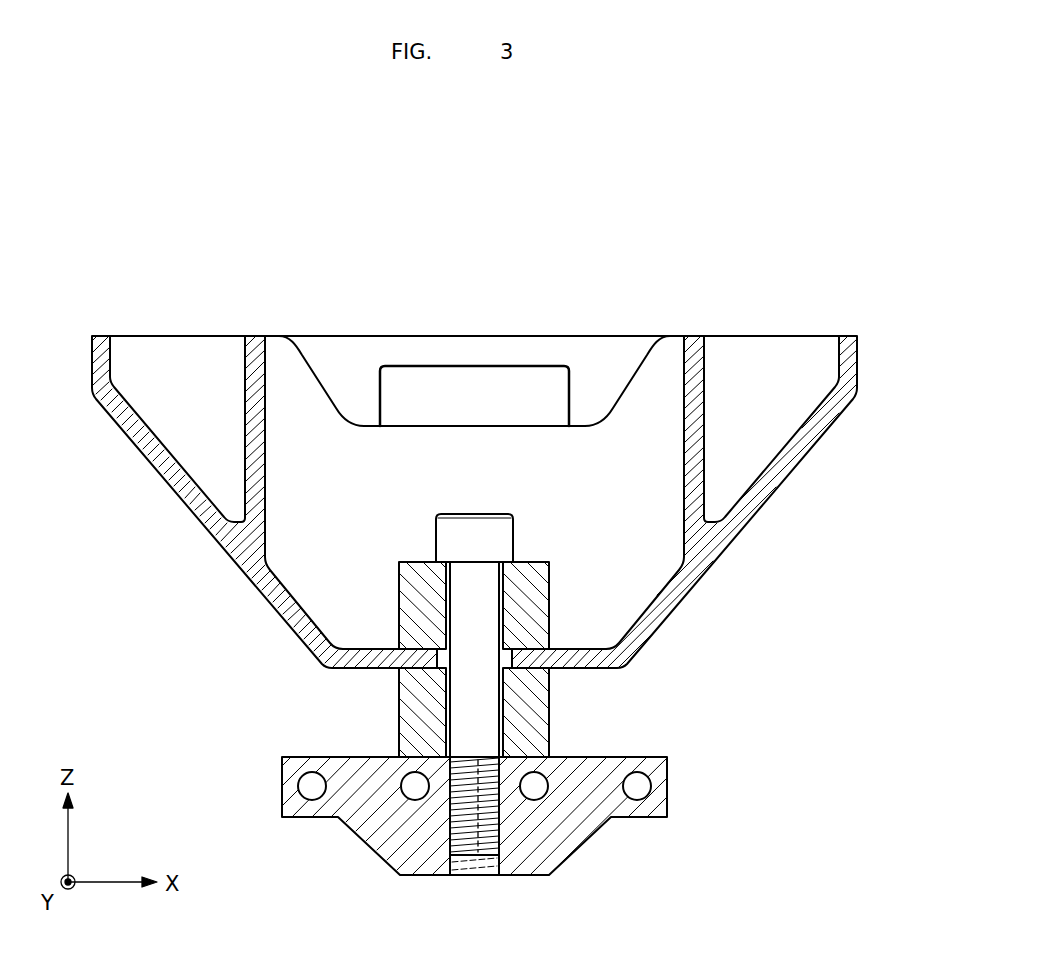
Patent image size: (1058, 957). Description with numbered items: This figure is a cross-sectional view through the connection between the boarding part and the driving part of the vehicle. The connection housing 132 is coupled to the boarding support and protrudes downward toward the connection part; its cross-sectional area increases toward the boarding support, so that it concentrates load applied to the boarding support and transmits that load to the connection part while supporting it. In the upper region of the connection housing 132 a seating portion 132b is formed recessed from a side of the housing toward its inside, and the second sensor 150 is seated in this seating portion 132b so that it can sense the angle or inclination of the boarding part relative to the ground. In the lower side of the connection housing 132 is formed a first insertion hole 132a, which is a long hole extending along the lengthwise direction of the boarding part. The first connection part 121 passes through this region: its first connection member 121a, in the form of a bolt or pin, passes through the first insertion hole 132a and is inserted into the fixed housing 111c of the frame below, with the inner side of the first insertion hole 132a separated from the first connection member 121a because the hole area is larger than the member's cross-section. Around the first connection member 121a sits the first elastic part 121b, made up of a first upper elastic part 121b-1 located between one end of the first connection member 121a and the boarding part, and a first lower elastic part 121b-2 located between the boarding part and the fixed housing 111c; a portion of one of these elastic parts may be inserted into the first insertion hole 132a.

The fixed housing 111c is at (662, 787).
The first connection part 121 is at (654, 684).
The first connection member 121a is at (480, 731).
The first elastic part 121b is at (624, 659).
The first upper elastic part 121b-1 is at (533, 625).
The first lower elastic part 121b-2 is at (538, 699).
The connection housing 132 is at (762, 492).
The first insertion hole 132a is at (440, 657).
The seating portion 132b is at (578, 425).
The second sensor 150 is at (491, 375).